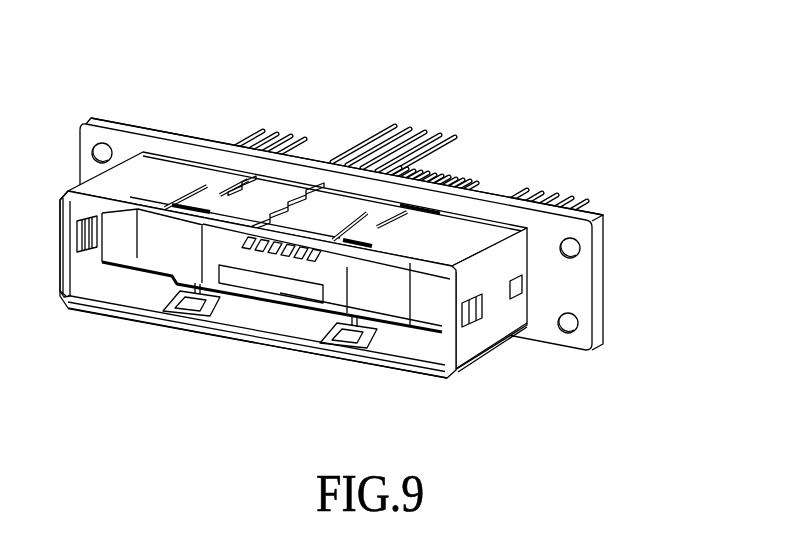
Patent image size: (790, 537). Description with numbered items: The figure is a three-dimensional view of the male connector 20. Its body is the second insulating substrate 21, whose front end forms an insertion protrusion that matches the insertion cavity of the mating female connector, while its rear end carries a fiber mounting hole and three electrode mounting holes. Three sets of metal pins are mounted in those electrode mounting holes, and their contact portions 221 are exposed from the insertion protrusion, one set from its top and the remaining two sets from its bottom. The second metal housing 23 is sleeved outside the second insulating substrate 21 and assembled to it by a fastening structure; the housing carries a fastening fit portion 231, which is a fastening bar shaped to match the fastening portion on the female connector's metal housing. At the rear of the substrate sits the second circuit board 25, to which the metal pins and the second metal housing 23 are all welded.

The male connector 20 is at (371, 223).
The second insulating substrate 21 is at (184, 265).
The second metal housing 23 is at (233, 338).
The second circuit board 25 is at (596, 280).
The contact portions 221 is at (294, 251).
The fastening fit portion 231 is at (197, 206).